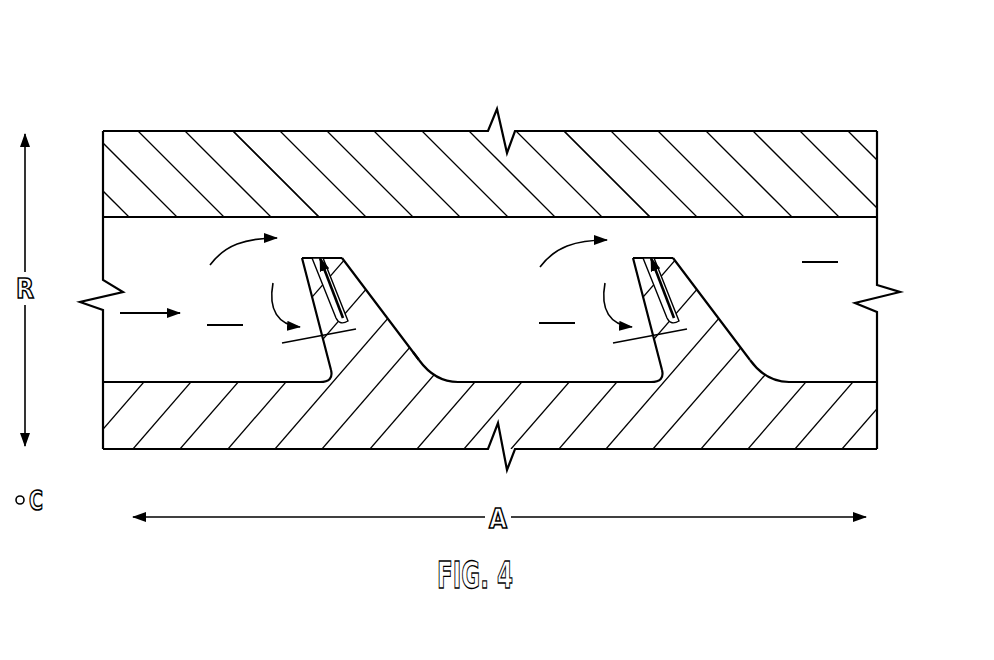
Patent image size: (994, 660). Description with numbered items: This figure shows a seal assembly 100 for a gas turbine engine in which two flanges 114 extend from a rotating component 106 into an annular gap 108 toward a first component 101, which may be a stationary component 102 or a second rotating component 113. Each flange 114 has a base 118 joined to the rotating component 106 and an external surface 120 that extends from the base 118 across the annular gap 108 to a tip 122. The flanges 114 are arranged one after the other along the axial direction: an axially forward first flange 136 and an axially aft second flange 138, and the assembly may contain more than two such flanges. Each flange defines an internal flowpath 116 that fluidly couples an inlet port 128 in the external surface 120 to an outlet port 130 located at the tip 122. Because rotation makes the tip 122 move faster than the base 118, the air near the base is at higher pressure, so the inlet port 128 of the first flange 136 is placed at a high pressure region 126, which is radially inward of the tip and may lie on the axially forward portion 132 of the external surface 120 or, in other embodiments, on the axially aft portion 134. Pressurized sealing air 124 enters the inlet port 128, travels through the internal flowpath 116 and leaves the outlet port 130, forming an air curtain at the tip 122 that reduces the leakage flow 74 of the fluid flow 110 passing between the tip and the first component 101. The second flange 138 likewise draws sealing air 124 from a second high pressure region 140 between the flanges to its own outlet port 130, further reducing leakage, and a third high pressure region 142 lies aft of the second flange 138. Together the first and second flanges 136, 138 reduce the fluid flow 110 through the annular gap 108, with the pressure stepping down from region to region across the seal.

The seal assembly 100 is at (96, 108).
The first component 101 is at (467, 152).
The leakage flow 74 is at (242, 238).
The tip 122 is at (308, 255).
The first flange 136 is at (325, 196).
The second flange 138 is at (656, 196).
The stationary component 102 is at (176, 217).
The second rotating component 113 is at (526, 240).
The outlet port 130 is at (333, 251).
The third high pressure region 142 is at (820, 247).
The inlet port 128 is at (444, 291).
The internal flowpath 116 is at (367, 297).
The fluid flow 110 is at (168, 301).
The high pressure region 126 is at (225, 309).
The second high pressure region 140 is at (557, 307).
The flange 114 is at (389, 321).
The external surface 120 is at (397, 333).
The rotating component 106 is at (173, 382).
The sealing air 124 is at (292, 341).
The base 118 is at (423, 364).
The annular gap 108 is at (848, 322).
The axially forward portion 132 is at (326, 348).
The axially aft portion 134 is at (413, 357).